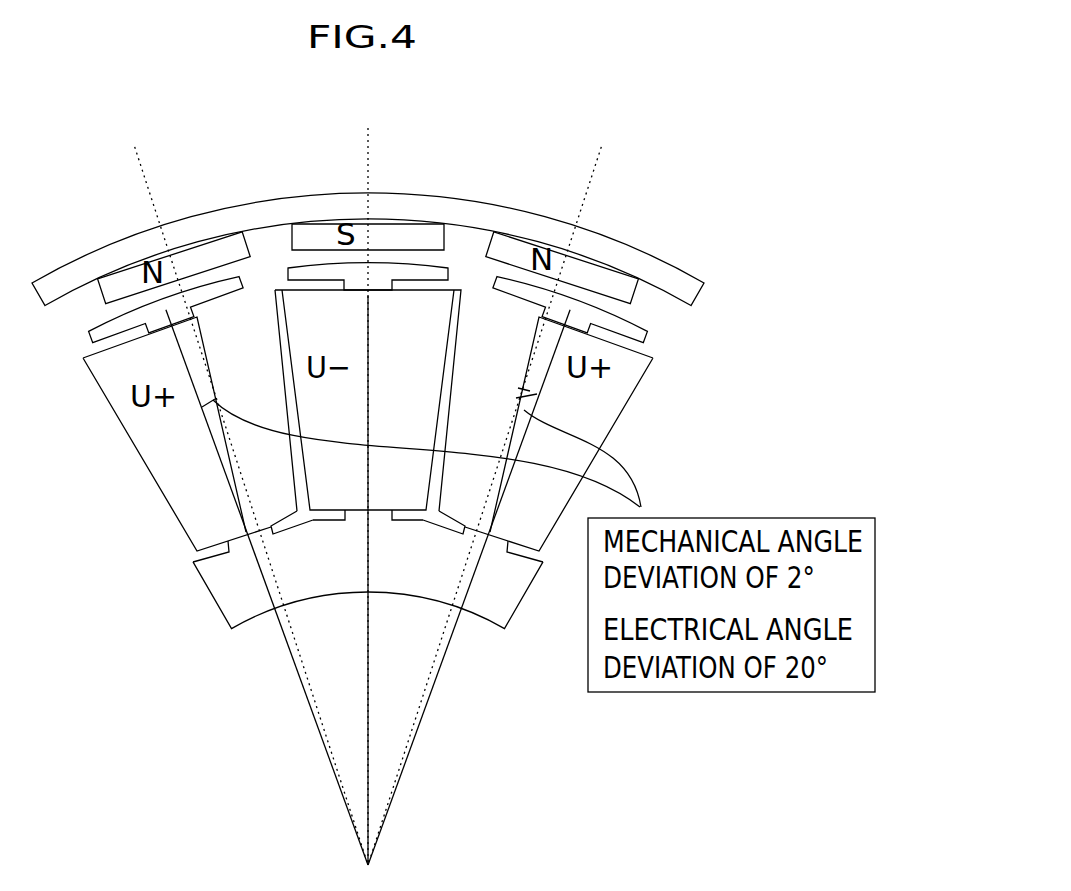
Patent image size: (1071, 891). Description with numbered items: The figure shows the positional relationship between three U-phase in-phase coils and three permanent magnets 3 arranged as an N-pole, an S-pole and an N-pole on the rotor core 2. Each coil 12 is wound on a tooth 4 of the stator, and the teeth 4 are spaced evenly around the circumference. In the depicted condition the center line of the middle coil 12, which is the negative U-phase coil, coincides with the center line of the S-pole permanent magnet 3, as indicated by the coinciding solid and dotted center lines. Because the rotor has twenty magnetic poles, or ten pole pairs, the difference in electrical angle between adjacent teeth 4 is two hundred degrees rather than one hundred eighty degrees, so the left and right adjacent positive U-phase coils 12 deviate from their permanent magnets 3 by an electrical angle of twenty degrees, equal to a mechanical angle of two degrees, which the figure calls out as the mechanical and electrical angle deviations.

The rotor core 2 is at (657, 267).
The permanent magnet 3 is at (603, 272).
The tooth 4 is at (205, 292).
The coil 12 is at (612, 390).